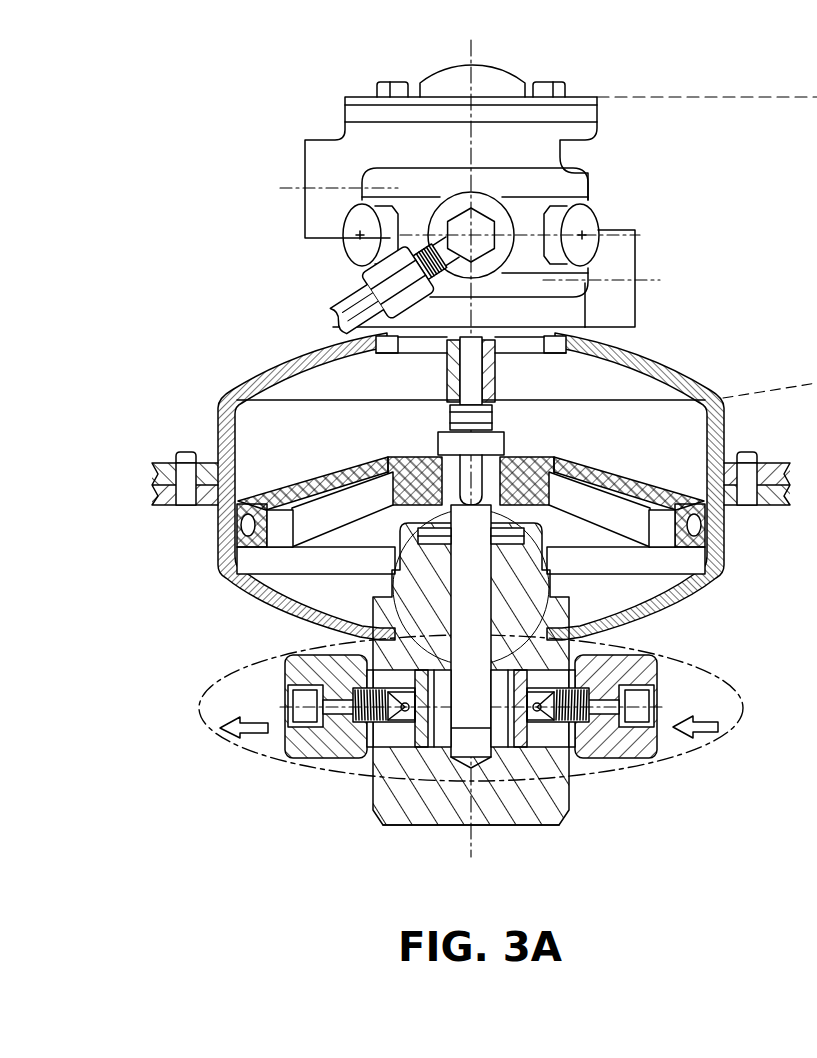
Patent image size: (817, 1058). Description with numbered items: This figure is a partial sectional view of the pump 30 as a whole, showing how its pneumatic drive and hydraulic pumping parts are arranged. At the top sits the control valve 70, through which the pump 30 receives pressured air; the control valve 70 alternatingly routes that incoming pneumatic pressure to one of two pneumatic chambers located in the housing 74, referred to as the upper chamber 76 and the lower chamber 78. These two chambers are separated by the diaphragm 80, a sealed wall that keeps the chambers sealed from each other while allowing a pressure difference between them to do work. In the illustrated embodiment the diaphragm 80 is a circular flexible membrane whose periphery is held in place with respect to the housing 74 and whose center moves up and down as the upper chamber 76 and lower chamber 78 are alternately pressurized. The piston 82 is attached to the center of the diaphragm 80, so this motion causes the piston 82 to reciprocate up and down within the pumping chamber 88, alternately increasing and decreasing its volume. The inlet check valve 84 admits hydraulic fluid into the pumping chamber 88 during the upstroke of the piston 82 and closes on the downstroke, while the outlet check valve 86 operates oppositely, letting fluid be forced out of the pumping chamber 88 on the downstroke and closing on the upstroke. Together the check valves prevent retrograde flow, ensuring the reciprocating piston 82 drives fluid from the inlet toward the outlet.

The pump 30 is at (190, 152).
The control valve 70 is at (575, 193).
The housing 74 is at (723, 398).
The upper chamber 76 is at (622, 392).
The lower chamber 78 is at (648, 593).
The diaphragm 80 is at (603, 473).
The piston 82 is at (395, 668).
The inlet check valve 84 is at (570, 745).
The outlet check valve 86 is at (400, 735).
The pumping chamber 88 is at (471, 861).